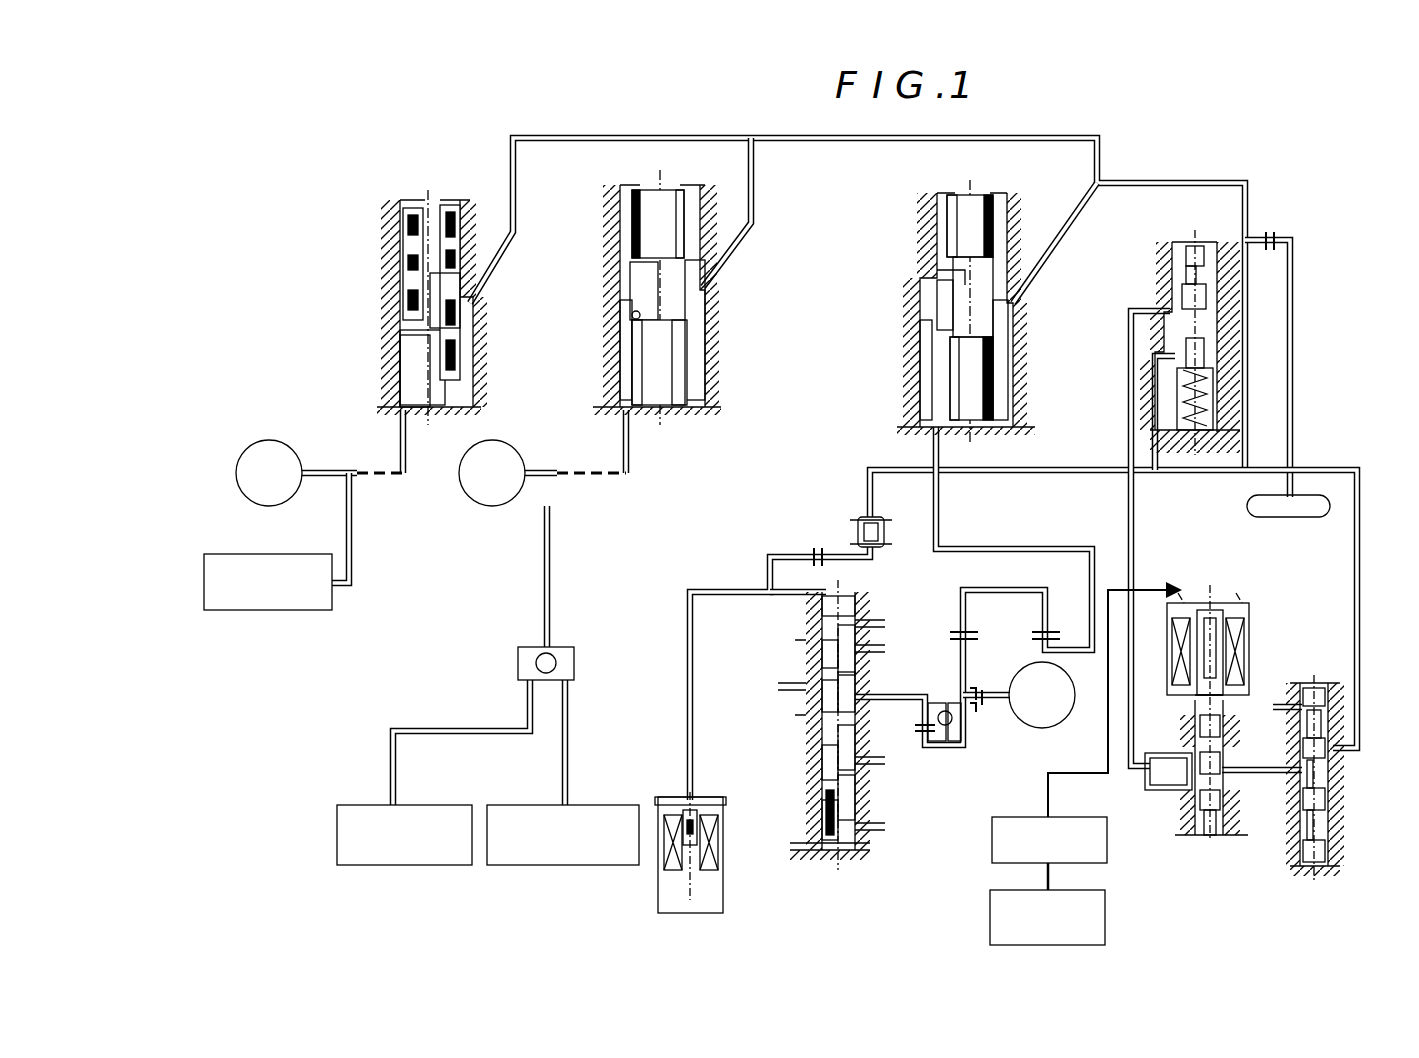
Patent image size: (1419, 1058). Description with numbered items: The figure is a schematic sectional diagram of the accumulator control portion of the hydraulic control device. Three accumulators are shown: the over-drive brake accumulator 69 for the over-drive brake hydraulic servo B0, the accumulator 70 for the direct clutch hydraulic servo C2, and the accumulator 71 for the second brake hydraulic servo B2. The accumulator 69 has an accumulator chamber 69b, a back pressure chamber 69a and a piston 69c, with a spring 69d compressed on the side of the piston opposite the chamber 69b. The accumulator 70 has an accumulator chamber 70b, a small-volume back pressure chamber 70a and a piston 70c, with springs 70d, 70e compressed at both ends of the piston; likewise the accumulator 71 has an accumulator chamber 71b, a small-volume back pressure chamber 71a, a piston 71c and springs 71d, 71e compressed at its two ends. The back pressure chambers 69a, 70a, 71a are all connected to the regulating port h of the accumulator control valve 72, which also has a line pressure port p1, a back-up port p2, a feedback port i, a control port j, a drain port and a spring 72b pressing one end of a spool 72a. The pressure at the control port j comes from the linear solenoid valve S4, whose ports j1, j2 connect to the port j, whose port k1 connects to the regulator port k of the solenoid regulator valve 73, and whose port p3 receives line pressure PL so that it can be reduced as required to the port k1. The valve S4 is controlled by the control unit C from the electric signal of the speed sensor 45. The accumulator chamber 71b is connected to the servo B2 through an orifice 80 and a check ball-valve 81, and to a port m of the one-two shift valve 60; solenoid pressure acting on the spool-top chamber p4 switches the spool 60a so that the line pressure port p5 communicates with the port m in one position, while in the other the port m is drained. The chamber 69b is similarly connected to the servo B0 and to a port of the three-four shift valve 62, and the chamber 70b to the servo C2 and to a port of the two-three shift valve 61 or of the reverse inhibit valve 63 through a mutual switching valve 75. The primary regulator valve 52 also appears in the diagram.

The over-drive brake accumulator 69 is at (418, 280).
The back pressure chamber 69a is at (470, 350).
The accumulator chamber 69b is at (400, 372).
The piston 69c is at (403, 305).
The spring 69d is at (420, 263).
The accumulator for the direct clutch 70 is at (667, 283).
The back pressure chamber 70a is at (705, 320).
The accumulator chamber 70b is at (605, 380).
The piston 70c is at (628, 318).
The spring 70d is at (695, 368).
The spring 70e is at (700, 220).
The accumulator for the brake B2 71 is at (975, 313).
The back pressure chamber 71a is at (1008, 350).
The accumulator chamber 71b is at (925, 385).
The piston 71c is at (930, 285).
The spring 71d is at (988, 427).
The spring 71e is at (995, 215).
The accumulator control valve 72 is at (1187, 295).
The spool 72a is at (1212, 248).
The spring 72b is at (1177, 388).
The solenoid regulator valve 73 is at (1325, 755).
The mutual switching valve 75 is at (515, 667).
The orifice 80 is at (1272, 235).
The check ball-valve 81 is at (940, 710).
The 1-2 shift valve 60 is at (1020, 654).
The spool 60a is at (815, 760).
The 2-3 shift valve 61 is at (368, 804).
The 3-4 shift valve 62 is at (240, 553).
The reverse inhibit valve 63 is at (532, 804).
The primary regulator valve 52 is at (1244, 506).
The speed sensor 45 is at (1105, 920).
The control unit C is at (992, 838).
The linear solenoid valve S4 is at (1213, 689).
The over-drive brake hydraulic servo B0 is at (269, 473).
The second brake hydraulic servo B2 is at (1042, 695).
The direct clutch hydraulic servo C2 is at (492, 473).
The line pressure port p1 is at (1155, 362).
The back-up port p2 is at (1225, 242).
The port p3 is at (1335, 760).
The spool-top chamber p4 is at (822, 592).
The line pressure port p5 is at (810, 672).
The line pressure PL is at (1034, 571).
The regulating port h is at (1215, 350).
The feedback port i is at (1225, 422).
The control port j is at (1165, 313).
The port j1 is at (1180, 750).
The port j2 is at (1185, 790).
The regulator port k is at (1292, 748).
The port k1 is at (1228, 774).
The port m is at (858, 698).